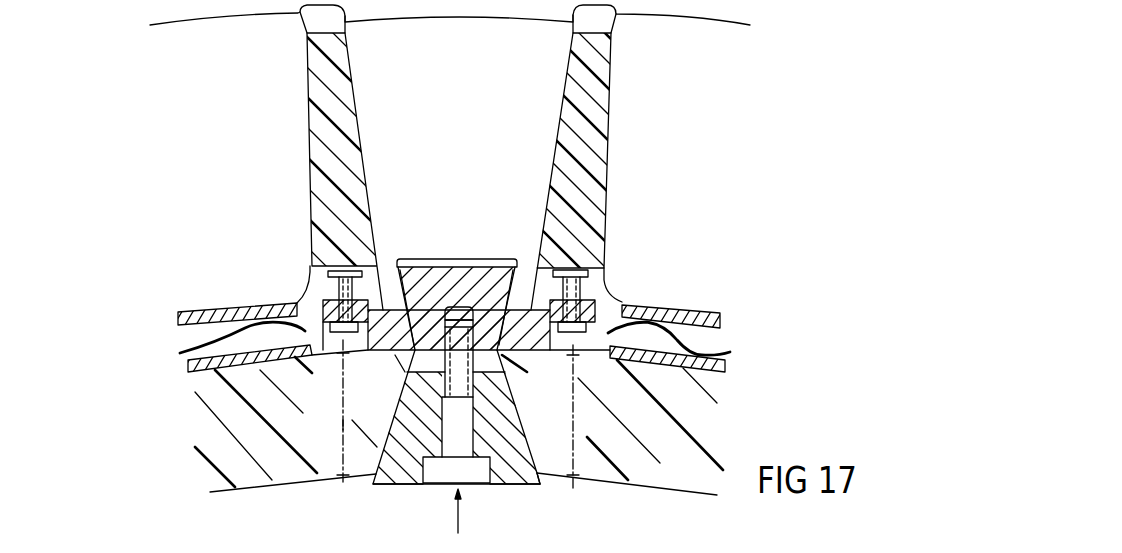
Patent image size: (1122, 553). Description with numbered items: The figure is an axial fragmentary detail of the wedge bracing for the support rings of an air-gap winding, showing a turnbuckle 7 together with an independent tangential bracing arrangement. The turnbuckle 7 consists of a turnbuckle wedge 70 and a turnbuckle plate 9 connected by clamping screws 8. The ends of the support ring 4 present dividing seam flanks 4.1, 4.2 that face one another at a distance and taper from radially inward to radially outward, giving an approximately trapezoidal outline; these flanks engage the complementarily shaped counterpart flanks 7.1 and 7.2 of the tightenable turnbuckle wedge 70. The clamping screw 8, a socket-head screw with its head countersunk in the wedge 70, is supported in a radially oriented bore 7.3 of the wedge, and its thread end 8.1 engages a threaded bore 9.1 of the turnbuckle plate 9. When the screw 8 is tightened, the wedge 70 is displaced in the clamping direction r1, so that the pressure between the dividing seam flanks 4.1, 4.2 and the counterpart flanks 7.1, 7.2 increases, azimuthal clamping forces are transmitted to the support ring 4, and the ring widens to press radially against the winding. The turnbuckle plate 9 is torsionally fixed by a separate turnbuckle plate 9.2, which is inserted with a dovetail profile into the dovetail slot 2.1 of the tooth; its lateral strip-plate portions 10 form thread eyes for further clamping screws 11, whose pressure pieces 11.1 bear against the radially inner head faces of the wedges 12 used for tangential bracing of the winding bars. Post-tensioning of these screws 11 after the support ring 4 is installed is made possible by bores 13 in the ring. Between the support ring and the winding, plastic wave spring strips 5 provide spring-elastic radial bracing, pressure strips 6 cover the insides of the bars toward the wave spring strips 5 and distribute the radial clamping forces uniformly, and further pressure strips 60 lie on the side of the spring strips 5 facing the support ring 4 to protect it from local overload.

The tangential clamping wedge 12 is at (318, 88).
The pressure piece 11.1 is at (313, 276).
The further clamping screw 11 is at (455, 383).
The lateral strip-plate portion 10 is at (322, 307).
The pressure strip 6 is at (180, 316).
The plastic wave spring strip 5 is at (180, 354).
The further pressure strip 60 is at (190, 373).
The turnbuckle plate 9 is at (387, 356).
The dovetail slot 2.1 is at (421, 267).
The threaded bore 9.1 is at (449, 300).
The thread end 8.1 is at (458, 303).
The separate turnbuckle plate 9.2 is at (472, 298).
The turnbuckle 7 is at (530, 434).
The counterpart flank 7.1 is at (408, 386).
The counterpart flank 7.2 is at (503, 388).
The radially oriented bore 7.3 is at (500, 412).
The clamping screw 8 is at (453, 447).
The turnbuckle wedge 70 is at (536, 468).
The dividing seam flank 4.2 is at (517, 474).
The dividing seam flank 4.1 is at (388, 474).
The clamping direction r1 is at (472, 514).
The bore 13 is at (342, 425).
The support ring 4 is at (667, 447).